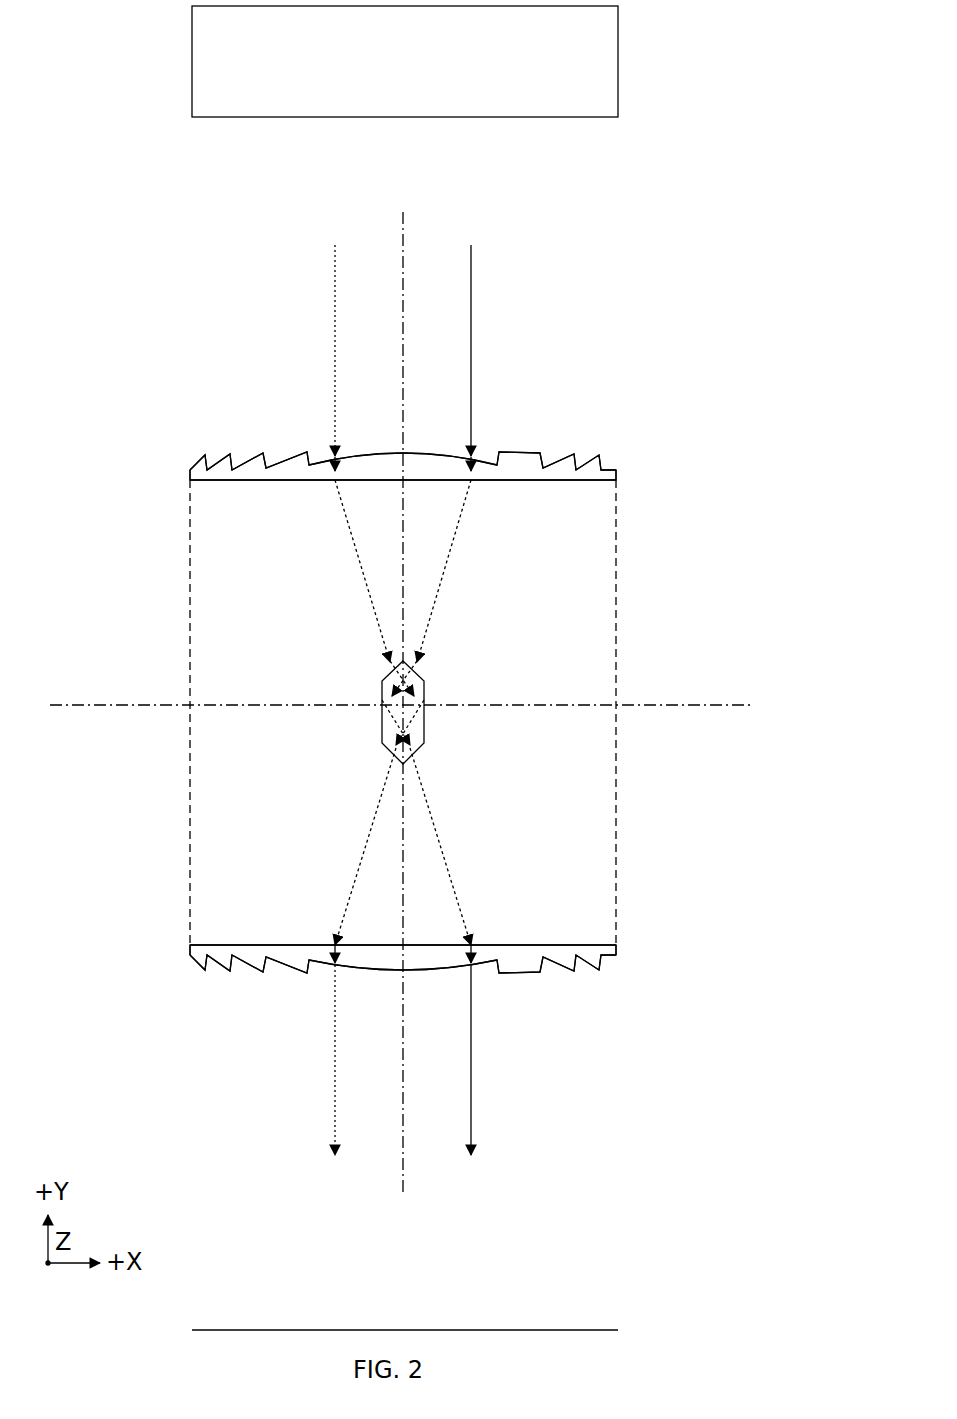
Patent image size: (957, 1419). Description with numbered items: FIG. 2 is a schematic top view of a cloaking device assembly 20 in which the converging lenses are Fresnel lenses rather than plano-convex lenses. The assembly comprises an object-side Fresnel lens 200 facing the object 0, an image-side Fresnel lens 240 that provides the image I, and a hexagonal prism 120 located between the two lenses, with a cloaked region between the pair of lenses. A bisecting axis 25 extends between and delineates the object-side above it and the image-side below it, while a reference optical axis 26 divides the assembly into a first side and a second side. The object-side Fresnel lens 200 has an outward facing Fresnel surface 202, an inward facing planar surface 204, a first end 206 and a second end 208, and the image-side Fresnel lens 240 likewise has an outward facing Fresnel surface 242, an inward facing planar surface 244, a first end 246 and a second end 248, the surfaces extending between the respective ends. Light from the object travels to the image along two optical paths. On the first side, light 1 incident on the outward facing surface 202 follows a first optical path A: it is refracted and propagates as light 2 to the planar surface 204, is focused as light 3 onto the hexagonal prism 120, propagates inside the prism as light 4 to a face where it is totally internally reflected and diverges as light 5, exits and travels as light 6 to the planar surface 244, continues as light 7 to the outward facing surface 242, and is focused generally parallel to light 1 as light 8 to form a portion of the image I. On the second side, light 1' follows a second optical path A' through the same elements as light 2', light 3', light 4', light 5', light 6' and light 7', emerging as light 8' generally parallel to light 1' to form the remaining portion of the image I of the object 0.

The object 0 is at (413, 75).
The cloaking device assembly 20 is at (720, 285).
The reference optical axis 26 is at (406, 222).
The bisecting axis 25 is at (693, 704).
The hexagonal prism 120 is at (432, 700).
The object-side Fresnel lens 200 is at (620, 455).
The outward facing Fresnel surface 202 is at (527, 458).
The inward facing planar surface 204 is at (550, 481).
The first end 206 is at (617, 478).
The second end 208 is at (189, 473).
The image-side Fresnel lens 240 is at (218, 990).
The outward facing Fresnel surface 242 is at (549, 972).
The inward facing planar surface 244 is at (562, 944).
The first end 246 is at (617, 948).
The second end 248 is at (189, 951).
The light 1 is at (493, 350).
The light 1' is at (311, 350).
The light 2 is at (485, 440).
The light 2' is at (317, 440).
The light 3 is at (452, 571).
The light 3' is at (351, 571).
The light 4 is at (383, 669).
The light 4' is at (424, 669).
The light 5 is at (379, 725).
The light 5' is at (430, 722).
The light 6 is at (446, 846).
The light 6' is at (354, 846).
The light 7 is at (488, 935).
The light 7' is at (317, 935).
The light 8 is at (493, 1060).
The light 8' is at (311, 1060).
The first optical path A is at (483, 232).
The second optical path A' is at (328, 232).
The image I is at (572, 1329).